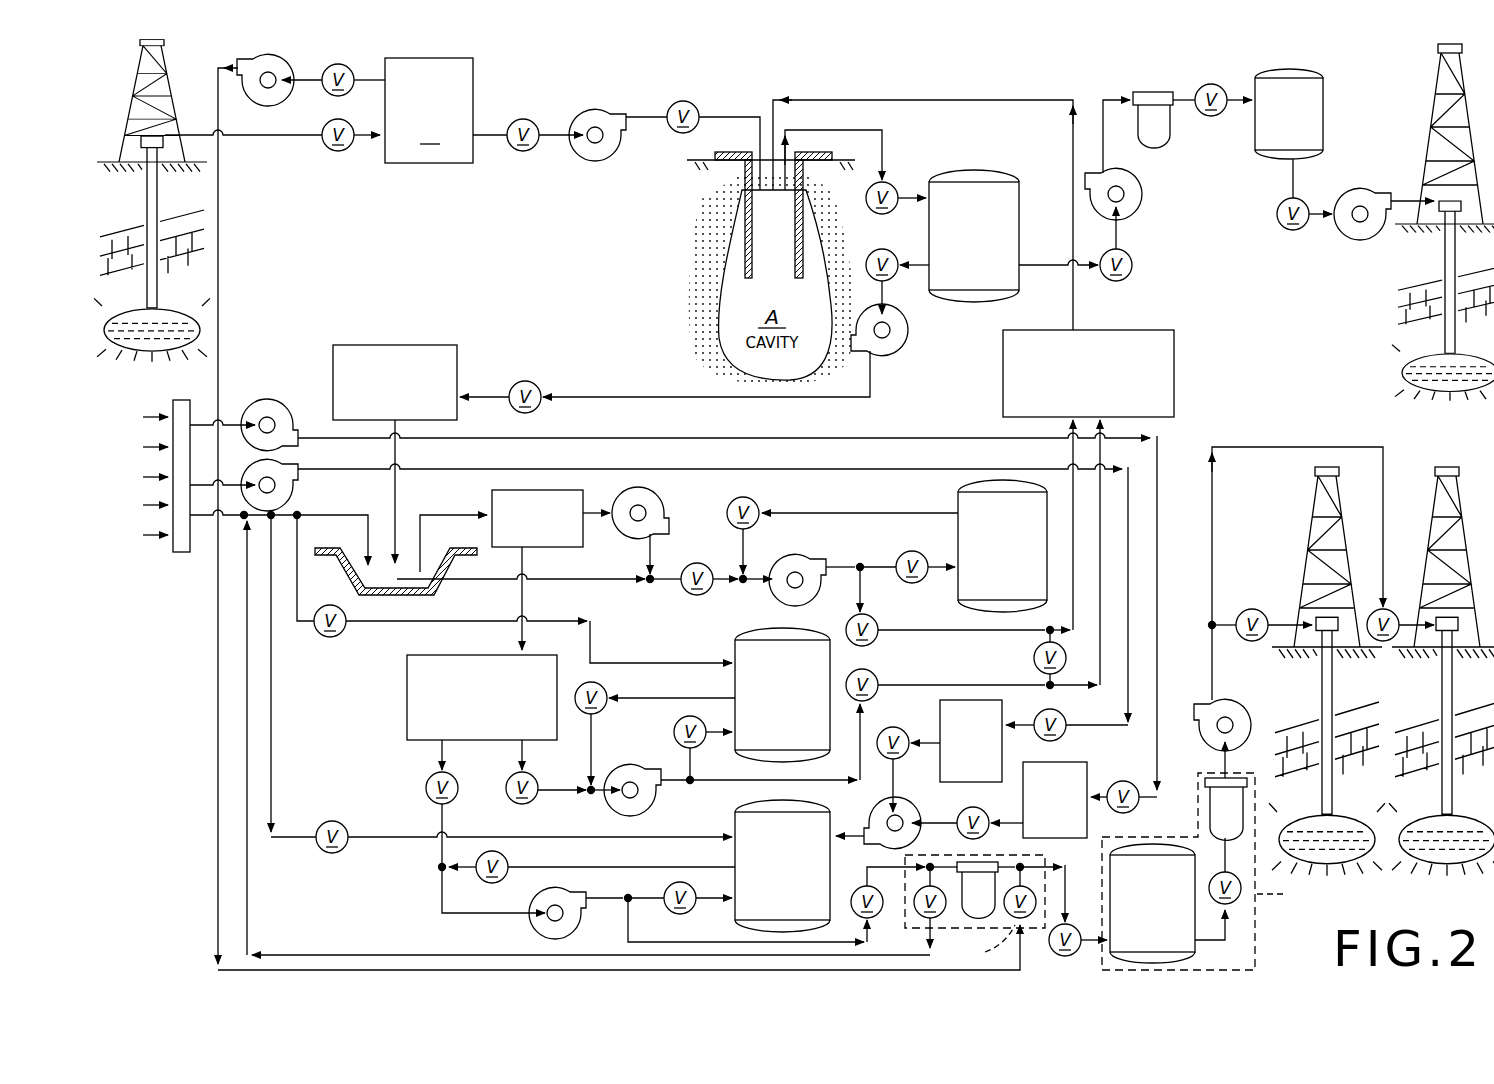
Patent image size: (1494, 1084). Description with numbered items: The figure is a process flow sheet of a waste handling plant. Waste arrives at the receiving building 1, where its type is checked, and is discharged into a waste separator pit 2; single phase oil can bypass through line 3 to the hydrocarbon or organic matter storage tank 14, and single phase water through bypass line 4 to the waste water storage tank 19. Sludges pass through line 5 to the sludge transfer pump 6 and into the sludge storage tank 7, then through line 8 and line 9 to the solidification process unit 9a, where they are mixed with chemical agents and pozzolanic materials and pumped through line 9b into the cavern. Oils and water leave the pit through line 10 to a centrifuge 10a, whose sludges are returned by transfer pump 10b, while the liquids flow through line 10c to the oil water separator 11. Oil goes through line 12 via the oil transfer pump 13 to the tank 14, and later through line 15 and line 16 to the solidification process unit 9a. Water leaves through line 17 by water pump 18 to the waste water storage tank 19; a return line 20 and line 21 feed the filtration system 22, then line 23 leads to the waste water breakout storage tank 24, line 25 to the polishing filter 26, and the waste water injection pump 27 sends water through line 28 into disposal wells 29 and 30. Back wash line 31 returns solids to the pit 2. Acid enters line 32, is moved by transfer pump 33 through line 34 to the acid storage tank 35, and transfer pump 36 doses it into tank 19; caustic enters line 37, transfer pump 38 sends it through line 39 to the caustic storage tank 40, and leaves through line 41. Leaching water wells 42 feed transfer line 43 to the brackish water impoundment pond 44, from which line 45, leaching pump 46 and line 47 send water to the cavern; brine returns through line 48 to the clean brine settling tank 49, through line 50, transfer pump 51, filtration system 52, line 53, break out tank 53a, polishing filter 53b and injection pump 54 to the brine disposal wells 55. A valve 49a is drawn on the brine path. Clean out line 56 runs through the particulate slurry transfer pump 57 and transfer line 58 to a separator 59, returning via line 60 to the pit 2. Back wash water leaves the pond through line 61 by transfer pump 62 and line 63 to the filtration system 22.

The receiving building 1 is at (180, 466).
The waste separator pit 2 is at (415, 594).
The line 3 is at (370, 627).
The bypass line 4 is at (276, 730).
The line 5 is at (592, 582).
The sludge transfer pump 6 is at (812, 560).
The sludge storage tank 7 is at (958, 496).
The line 8 is at (832, 512).
The line 9 is at (910, 628).
The solidification process unit 9a is at (1176, 375).
The line 9b is at (1000, 100).
The line 10 is at (475, 512).
The centrifuge 10a is at (520, 529).
The transfer pump 10b is at (665, 508).
The line 10c is at (520, 592).
The oil water separator 11 is at (408, 720).
The line 12 is at (565, 785).
The oil transfer pump 13 is at (608, 800).
The hydrocarbon or organic matter storage tank 14 is at (735, 640).
The line 15 is at (618, 710).
The line 16 is at (965, 684).
The line 17 is at (436, 770).
The water pump 18 is at (530, 928).
The waste water storage tank 19 is at (735, 818).
The return line 20 is at (630, 866).
The line 21 is at (665, 940).
The filtration system 22 is at (965, 900).
The line 23 is at (1068, 880).
The waste water breakout storage tank 24 is at (1138, 910).
The line 25 is at (1232, 925).
The polishing filter 26 is at (1210, 800).
The waste water injection pump 27 is at (1252, 722).
The line 28 is at (1210, 650).
The hazardous waste water disposal well 29 is at (1338, 688).
The hazardous waste water disposal well 30 is at (1440, 704).
The back wash line 31 is at (360, 953).
The line 32 is at (232, 420).
The transfer pump 33 is at (286, 403).
The line 34 is at (650, 437).
The acid storage tank 35 is at (1042, 810).
The transfer pump 36 is at (906, 802).
The line 37 is at (232, 480).
The transfer pump 38 is at (300, 500).
The line 39 is at (650, 468).
The caustic storage tank 40 is at (958, 756).
The line 41 is at (890, 790).
The leaching water well 42 is at (143, 130).
The transfer line 43 is at (190, 133).
The brackish water impoundment pond 44 is at (414, 115).
The line 45 is at (508, 128).
The leaching pump 46 is at (598, 108).
The line 47 is at (660, 108).
The line 48 is at (890, 140).
The clean brine settling tank 49 is at (972, 172).
The valve 49a is at (1132, 270).
The line 50 is at (1120, 236).
The transfer pump 51 is at (1142, 192).
The filtration system 52 is at (1150, 90).
The line 53 is at (1200, 85).
The break out tank 53a is at (1272, 122).
The polishing filter 53b is at (1278, 225).
The injection pump 54 is at (1352, 240).
The brine disposal wells 55 is at (1405, 300).
The clean out line 56 is at (900, 280).
The particulate slurry transfer pump 57 is at (908, 345).
The transfer line 58 is at (612, 395).
The separator 59 is at (393, 344).
The line 60 is at (400, 455).
The line 61 is at (312, 88).
The transfer pump 62 is at (286, 62).
The line 63 is at (216, 66).